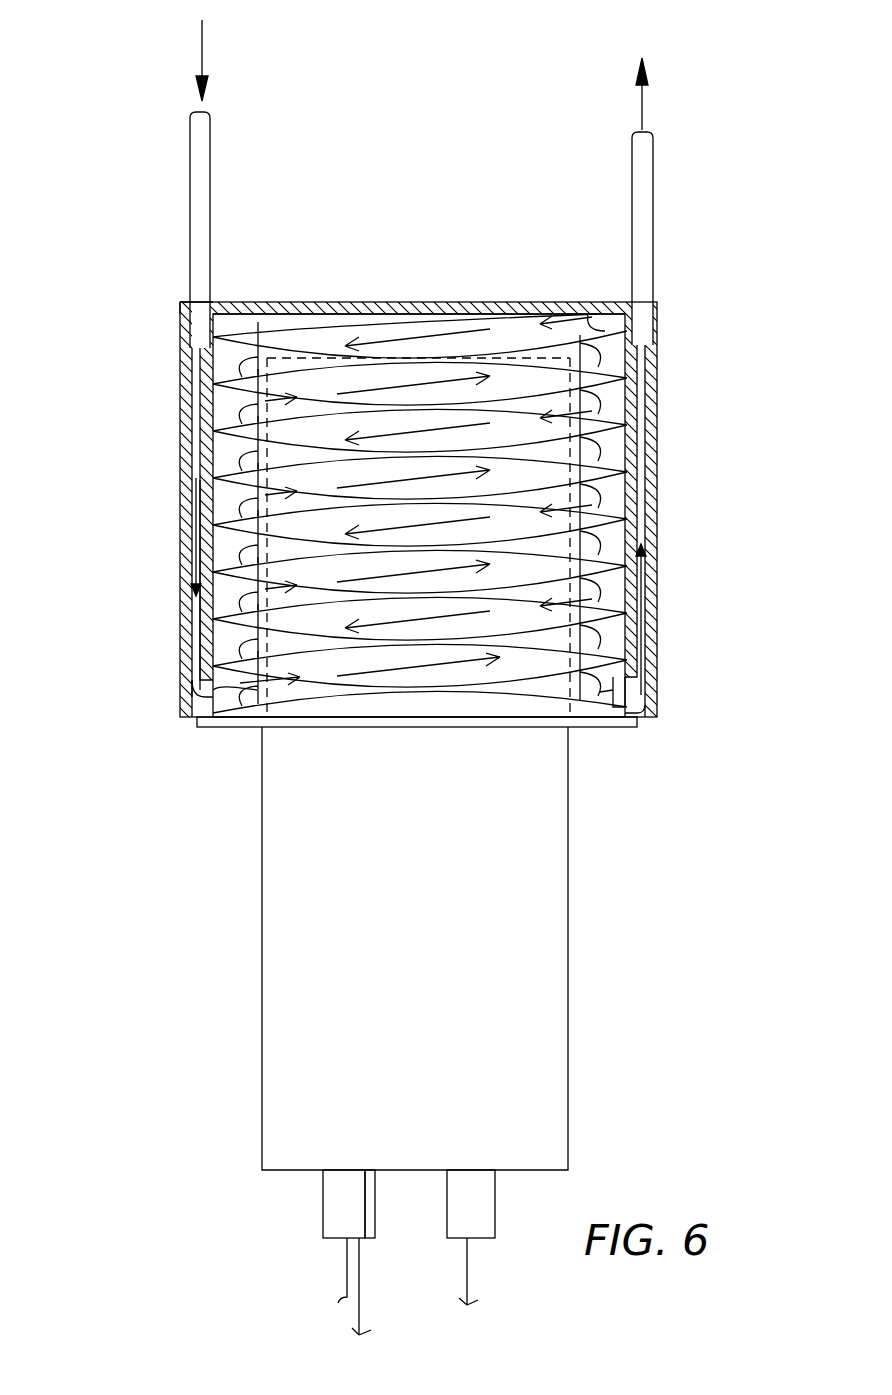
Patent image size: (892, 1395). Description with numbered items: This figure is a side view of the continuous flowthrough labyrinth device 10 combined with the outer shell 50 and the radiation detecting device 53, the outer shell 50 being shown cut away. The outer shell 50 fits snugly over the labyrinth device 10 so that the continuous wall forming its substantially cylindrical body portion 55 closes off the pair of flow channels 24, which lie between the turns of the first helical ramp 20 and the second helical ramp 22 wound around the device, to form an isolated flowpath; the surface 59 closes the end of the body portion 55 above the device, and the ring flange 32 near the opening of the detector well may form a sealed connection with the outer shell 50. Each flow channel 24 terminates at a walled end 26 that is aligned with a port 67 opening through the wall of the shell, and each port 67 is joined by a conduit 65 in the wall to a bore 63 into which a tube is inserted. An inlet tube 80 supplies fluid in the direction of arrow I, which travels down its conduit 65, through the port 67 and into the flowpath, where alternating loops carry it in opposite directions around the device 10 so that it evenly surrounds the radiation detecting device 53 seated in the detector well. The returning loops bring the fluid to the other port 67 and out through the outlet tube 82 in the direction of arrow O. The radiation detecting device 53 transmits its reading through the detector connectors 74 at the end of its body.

The continuous flowthrough labyrinth device 10 is at (547, 707).
The first helical ramp 20 is at (195, 565).
The second helical ramp 22 is at (645, 530).
The flow channels 24 is at (612, 648).
The walled end 26 is at (222, 685).
The ring flange 32 is at (625, 715).
The outer shell 50 is at (170, 405).
The radiation detecting device 53 is at (262, 866).
The cylindrical body portion 55 is at (656, 470).
The surface 59 is at (422, 301).
The bores 63 is at (185, 312).
The conduit 65 is at (195, 633).
The port 67 is at (198, 705).
The detector connectors 74 is at (494, 1210).
The inlet tube 80 is at (192, 232).
The outlet tube 82 is at (652, 237).
The arrow I is at (200, 48).
The arrow O is at (643, 108).